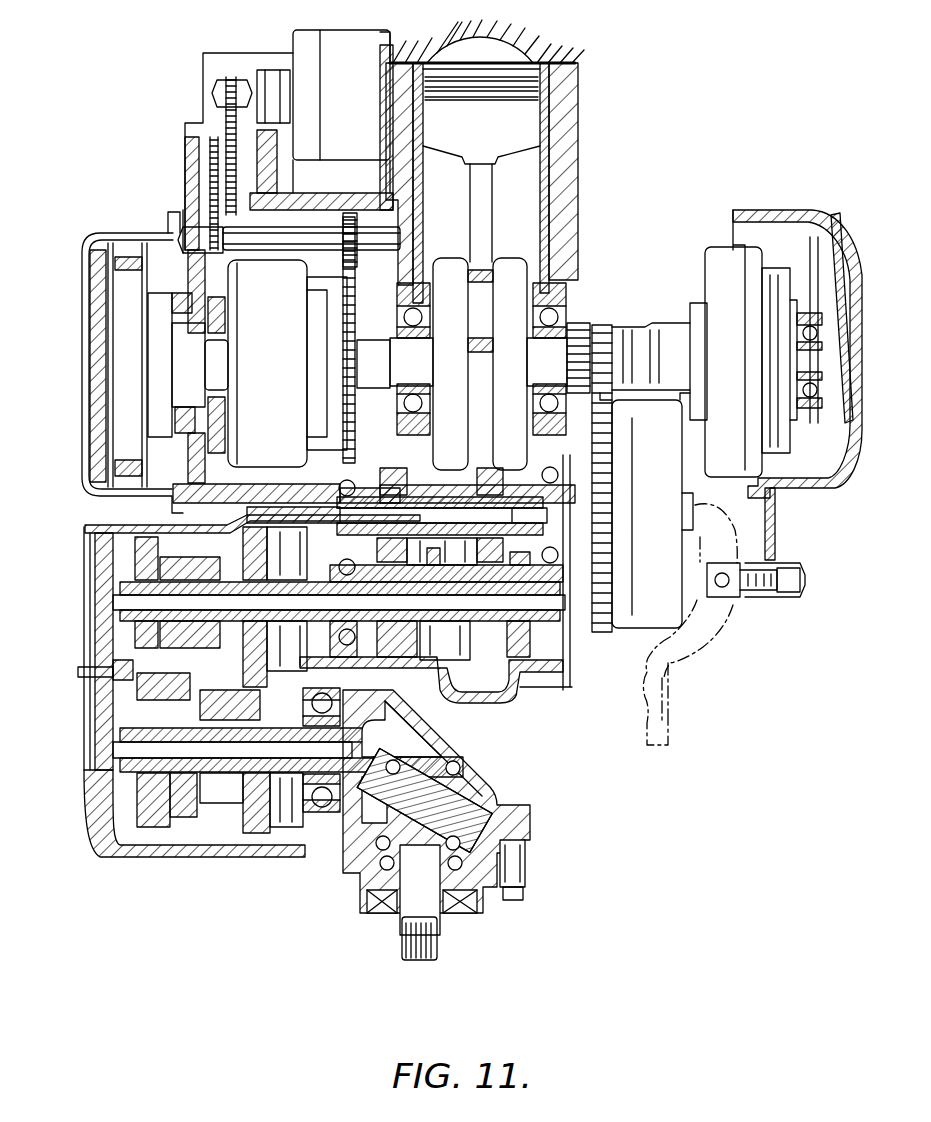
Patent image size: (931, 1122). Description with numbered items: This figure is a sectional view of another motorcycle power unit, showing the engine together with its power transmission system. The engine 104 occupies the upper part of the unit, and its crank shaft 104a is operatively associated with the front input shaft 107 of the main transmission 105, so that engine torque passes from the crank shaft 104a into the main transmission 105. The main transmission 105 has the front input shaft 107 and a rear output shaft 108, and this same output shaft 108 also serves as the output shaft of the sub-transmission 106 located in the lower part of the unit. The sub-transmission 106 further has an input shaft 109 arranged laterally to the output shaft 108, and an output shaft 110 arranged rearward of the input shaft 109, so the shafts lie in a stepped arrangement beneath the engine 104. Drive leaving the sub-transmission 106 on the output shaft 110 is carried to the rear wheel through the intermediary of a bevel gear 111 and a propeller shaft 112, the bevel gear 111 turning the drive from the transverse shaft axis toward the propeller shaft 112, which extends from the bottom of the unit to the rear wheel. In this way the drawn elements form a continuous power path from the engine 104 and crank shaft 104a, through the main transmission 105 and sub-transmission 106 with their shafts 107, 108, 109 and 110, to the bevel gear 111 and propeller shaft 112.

The engine 104 is at (552, 146).
The crank shaft 104a is at (573, 322).
The main transmission 105 is at (497, 676).
The sub-transmission 106 is at (112, 690).
The input shaft 107 is at (440, 486).
The output shaft 108 is at (442, 640).
The input shaft 109 is at (229, 620).
The output shaft 110 is at (210, 815).
The bevel gear 111 is at (497, 800).
The propeller shaft 112 is at (438, 922).